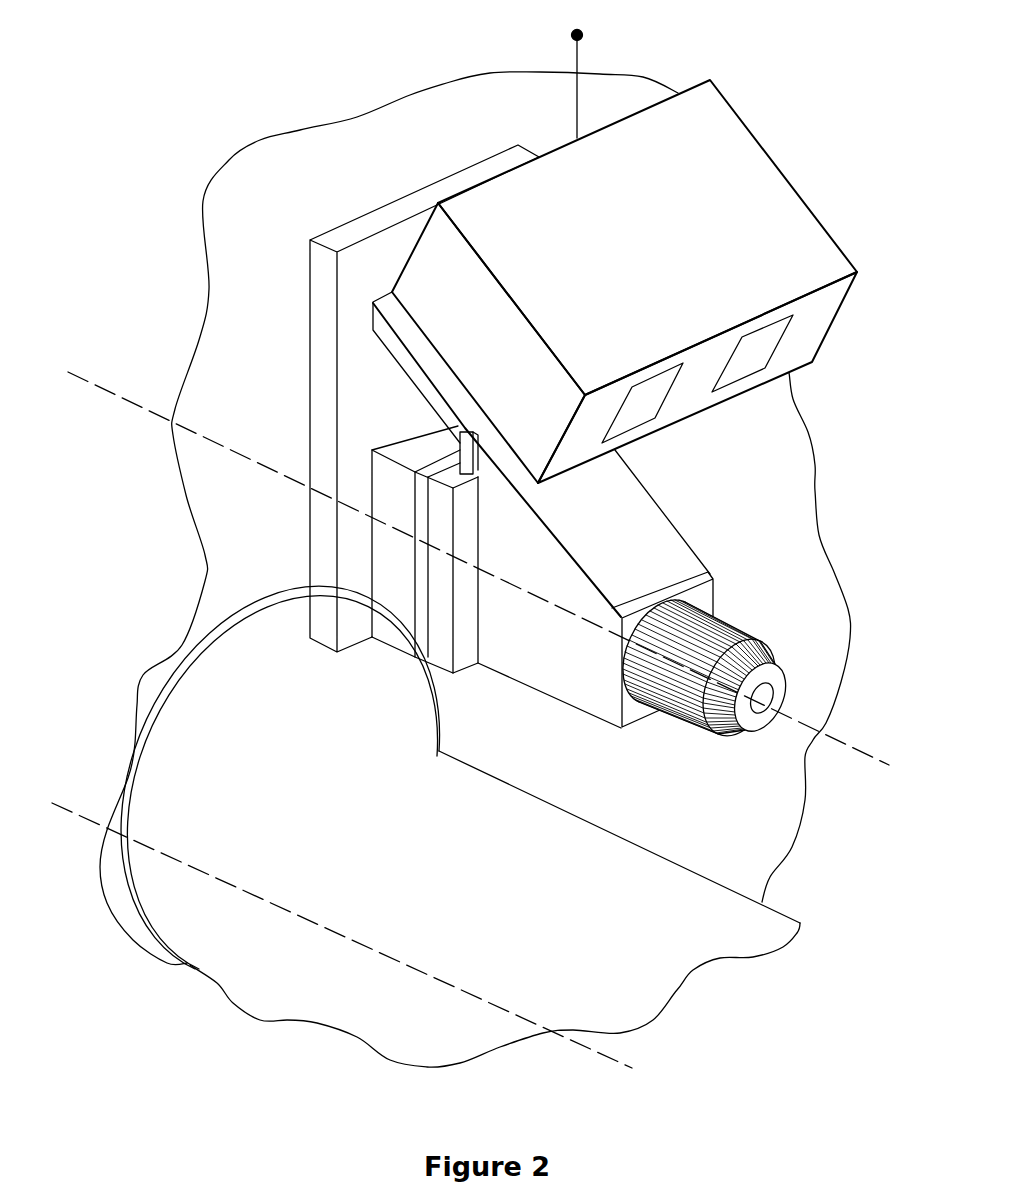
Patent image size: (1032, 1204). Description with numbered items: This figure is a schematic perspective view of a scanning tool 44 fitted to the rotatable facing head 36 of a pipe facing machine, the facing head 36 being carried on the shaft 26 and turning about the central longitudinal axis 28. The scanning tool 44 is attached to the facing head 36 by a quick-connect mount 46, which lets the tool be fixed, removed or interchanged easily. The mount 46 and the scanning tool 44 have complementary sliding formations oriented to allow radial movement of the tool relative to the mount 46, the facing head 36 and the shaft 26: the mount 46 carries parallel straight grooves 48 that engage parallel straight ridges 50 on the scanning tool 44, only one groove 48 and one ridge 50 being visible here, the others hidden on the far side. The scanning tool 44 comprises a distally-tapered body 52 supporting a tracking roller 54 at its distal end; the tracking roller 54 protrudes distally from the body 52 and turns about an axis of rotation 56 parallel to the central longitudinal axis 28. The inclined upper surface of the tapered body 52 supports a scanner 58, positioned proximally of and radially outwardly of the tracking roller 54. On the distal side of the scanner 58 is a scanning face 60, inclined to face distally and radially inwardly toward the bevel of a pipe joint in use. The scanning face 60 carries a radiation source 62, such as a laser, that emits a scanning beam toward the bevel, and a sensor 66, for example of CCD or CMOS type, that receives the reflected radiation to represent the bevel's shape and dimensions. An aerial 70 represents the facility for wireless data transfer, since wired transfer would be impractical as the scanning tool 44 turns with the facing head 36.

The shaft 26 is at (668, 972).
The central longitudinal axis 28 is at (67, 807).
The facing head 36 is at (410, 123).
The scanning tool 44 is at (790, 93).
The quick-connect mount 46 is at (363, 262).
The grooves 48 is at (467, 478).
The ridges 50 is at (468, 447).
The distally-tapered body 52 is at (648, 520).
The tracking roller 54 is at (760, 634).
The axis of rotation 56 is at (100, 388).
The scanner 58 is at (645, 281).
The scanning face 60 is at (718, 375).
The radiation source 62 is at (653, 387).
The sensor 66 is at (762, 343).
The aerial 70 is at (576, 53).